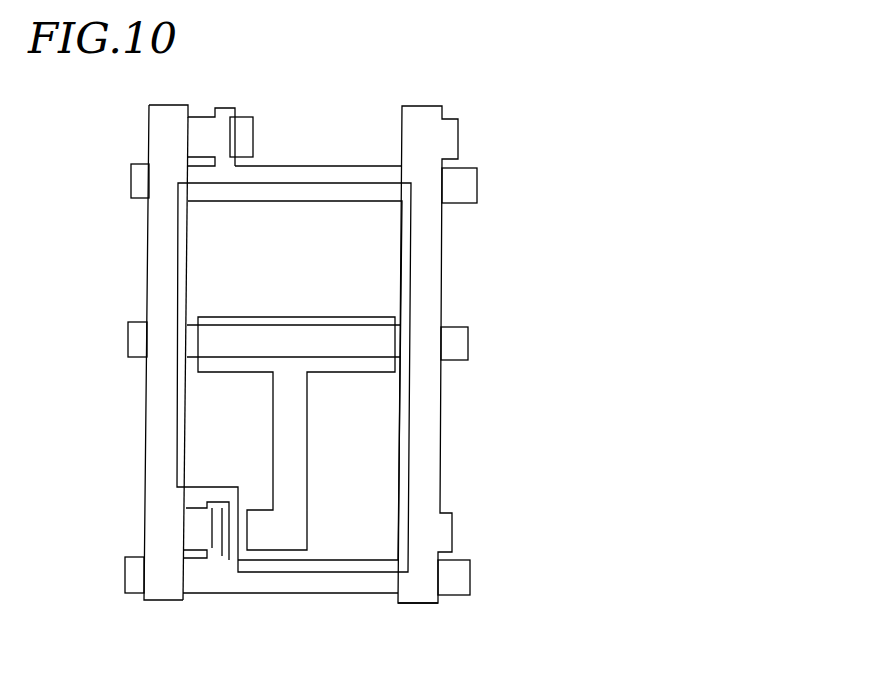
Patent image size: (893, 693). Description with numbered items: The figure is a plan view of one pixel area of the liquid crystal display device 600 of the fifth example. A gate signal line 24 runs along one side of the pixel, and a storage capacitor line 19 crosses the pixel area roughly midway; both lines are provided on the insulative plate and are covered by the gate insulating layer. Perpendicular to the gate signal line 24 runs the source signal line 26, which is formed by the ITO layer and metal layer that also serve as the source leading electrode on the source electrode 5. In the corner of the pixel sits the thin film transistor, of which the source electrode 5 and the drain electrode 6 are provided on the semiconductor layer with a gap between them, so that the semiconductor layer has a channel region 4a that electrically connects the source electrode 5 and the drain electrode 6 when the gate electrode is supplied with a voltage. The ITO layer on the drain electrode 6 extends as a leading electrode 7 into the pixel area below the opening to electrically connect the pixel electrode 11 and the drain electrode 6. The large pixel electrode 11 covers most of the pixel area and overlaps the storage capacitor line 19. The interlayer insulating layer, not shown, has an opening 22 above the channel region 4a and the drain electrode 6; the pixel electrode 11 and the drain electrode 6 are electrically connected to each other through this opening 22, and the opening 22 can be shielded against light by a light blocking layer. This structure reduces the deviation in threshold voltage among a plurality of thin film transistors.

The liquid crystal display device 600 is at (608, 127).
The source electrode 5 is at (188, 537).
The gate signal line 24 is at (465, 580).
The source signal line 26 is at (420, 593).
The pixel electrode 11 is at (383, 257).
The storage capacitor line 19 is at (465, 343).
The leading electrode 7 is at (300, 437).
The opening 22 is at (211, 530).
The channel region 4a is at (213, 548).
The drain electrode 6 is at (229, 540).